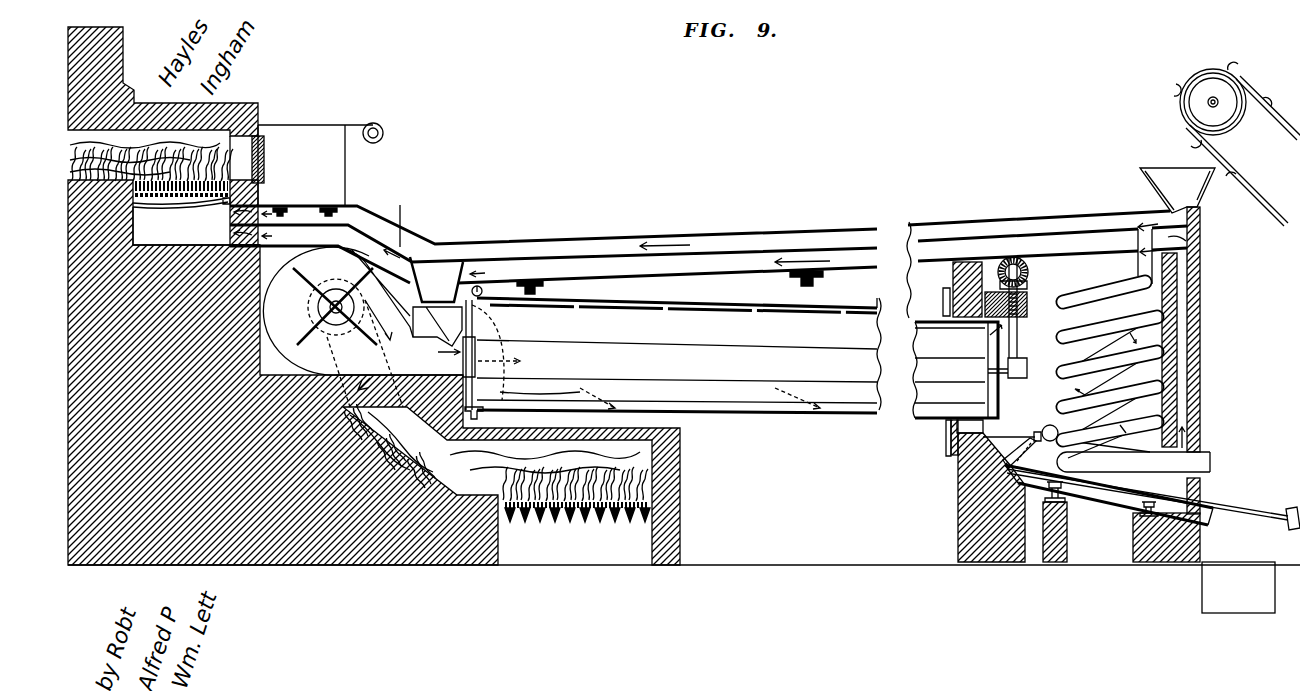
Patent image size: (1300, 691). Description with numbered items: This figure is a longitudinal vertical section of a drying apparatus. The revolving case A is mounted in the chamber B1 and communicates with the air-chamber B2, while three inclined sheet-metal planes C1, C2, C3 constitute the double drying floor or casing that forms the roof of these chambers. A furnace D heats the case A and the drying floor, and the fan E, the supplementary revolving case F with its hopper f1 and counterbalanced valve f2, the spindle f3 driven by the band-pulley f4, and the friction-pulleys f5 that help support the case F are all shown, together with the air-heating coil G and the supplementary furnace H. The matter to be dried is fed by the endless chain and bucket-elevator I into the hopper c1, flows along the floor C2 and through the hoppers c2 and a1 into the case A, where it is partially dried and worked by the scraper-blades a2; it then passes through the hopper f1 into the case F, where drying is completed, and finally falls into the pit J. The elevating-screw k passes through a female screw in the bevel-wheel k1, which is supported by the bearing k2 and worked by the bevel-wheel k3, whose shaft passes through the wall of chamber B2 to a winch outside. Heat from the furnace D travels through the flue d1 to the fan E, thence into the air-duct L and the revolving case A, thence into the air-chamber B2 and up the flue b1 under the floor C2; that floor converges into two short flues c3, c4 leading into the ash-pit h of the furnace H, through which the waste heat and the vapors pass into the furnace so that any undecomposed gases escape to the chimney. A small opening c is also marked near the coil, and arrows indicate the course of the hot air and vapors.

The supplementary furnace H is at (151, 175).
The ash-pit h is at (196, 226).
The short flue c4 is at (553, 225).
The short flue c3 is at (553, 254).
The hopper c2 is at (436, 279).
The inclined plane C3 is at (712, 233).
The inclined plane C2 is at (792, 259).
The inclined plane C1 is at (667, 280).
The fan E is at (363, 327).
The hopper a1 is at (437, 331).
The flue d1 is at (362, 395).
The furnace D is at (550, 486).
The revolving case A is at (672, 352).
The scraper-blades a2 is at (687, 318).
The air-duct L is at (652, 374).
The chamber B1 is at (876, 293).
The opening to funnel c is at (1177, 248).
The air-chamber B2 is at (1100, 378).
The bevel-wheel k1 is at (999, 289).
The bearing k2 is at (1016, 304).
The bevel-wheel k3 is at (1022, 272).
The elevating-screw k is at (1046, 330).
The air-heating coil G is at (1102, 343).
The flue b1 is at (1174, 350).
The hopper c1 is at (1177, 190).
The endless chain and bucket-elevator I is at (1237, 144).
The counterbalanced valve f2 is at (1020, 426).
The hopper f1 is at (1019, 453).
The supplementary revolving case F is at (1109, 488).
The friction-pulleys f5 is at (1121, 522).
The spindle f3 is at (1147, 500).
The band-pulley f4 is at (1291, 512).
The pit J is at (1238, 587).